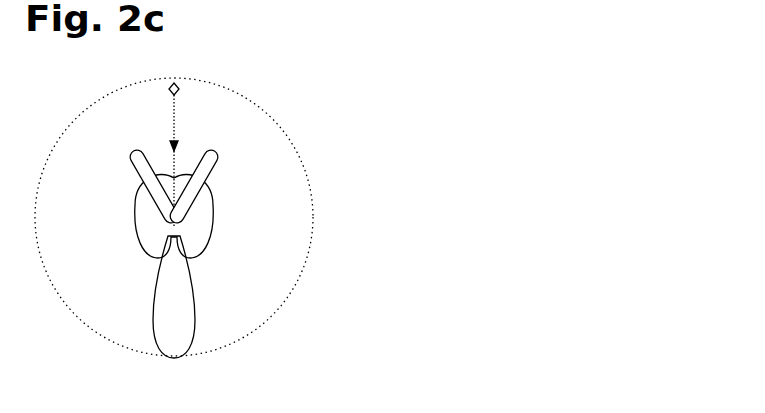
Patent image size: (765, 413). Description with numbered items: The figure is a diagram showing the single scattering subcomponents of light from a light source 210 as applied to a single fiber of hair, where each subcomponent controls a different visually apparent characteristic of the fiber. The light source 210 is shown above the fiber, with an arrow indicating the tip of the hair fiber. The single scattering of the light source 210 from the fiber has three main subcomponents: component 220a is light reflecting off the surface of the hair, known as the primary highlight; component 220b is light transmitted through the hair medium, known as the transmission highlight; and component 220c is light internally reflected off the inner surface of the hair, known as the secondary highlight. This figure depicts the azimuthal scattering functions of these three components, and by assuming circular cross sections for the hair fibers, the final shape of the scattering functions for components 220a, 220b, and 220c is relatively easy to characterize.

The light source 210 is at (379, 124).
The component R 220a is at (380, 207).
The component TT 220b is at (389, 297).
The component TRT 220c is at (381, 143).